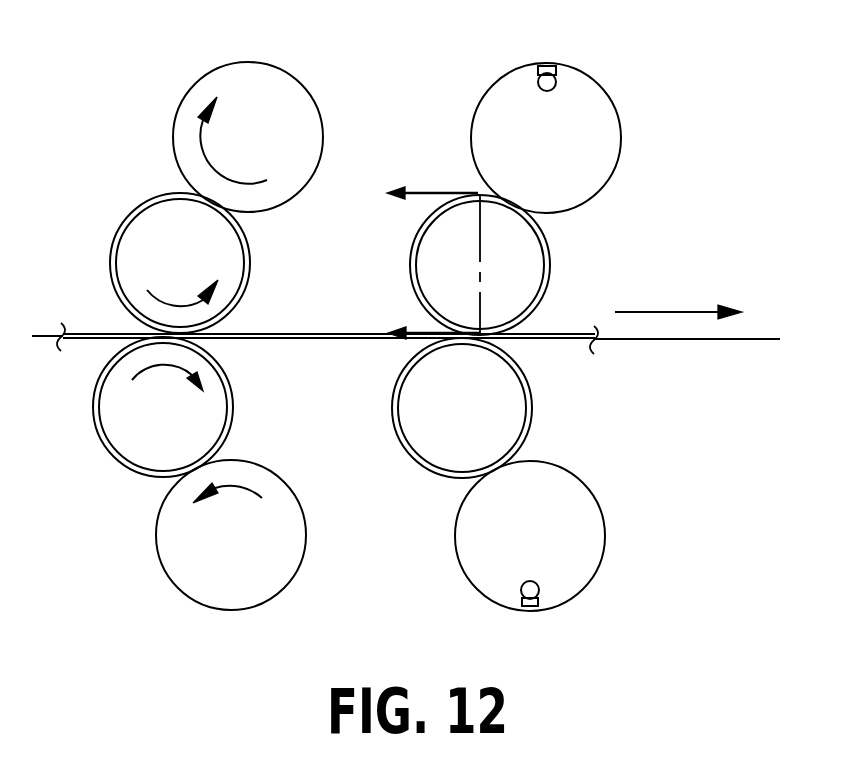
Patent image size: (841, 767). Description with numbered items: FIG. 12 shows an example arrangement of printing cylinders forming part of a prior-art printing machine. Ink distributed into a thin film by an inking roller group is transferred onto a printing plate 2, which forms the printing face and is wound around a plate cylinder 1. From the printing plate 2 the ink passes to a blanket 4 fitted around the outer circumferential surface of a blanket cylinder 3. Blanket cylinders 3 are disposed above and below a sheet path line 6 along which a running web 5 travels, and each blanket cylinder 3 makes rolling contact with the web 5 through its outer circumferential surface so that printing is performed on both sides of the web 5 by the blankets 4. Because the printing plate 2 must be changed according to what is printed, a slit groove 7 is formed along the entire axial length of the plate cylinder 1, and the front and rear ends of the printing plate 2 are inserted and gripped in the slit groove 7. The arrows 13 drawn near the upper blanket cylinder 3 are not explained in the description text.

The plate cylinder 1 is at (205, 92).
The printing plate 2 is at (290, 72).
The blanket cylinder 3 is at (220, 242).
The blanket 4 is at (243, 300).
The web 5 is at (312, 333).
The sheet path line 6 is at (700, 340).
The slit groove 7 is at (548, 62).
The offset direction arrow 13 is at (425, 241).